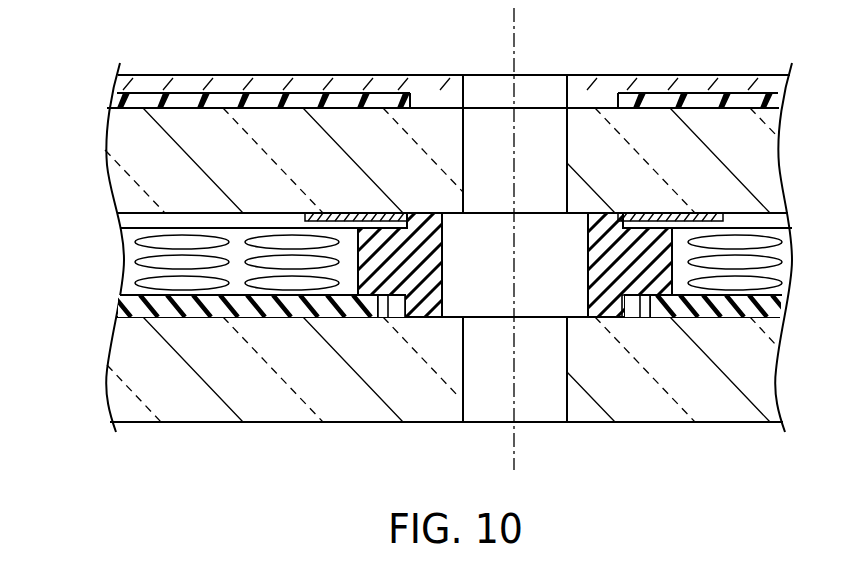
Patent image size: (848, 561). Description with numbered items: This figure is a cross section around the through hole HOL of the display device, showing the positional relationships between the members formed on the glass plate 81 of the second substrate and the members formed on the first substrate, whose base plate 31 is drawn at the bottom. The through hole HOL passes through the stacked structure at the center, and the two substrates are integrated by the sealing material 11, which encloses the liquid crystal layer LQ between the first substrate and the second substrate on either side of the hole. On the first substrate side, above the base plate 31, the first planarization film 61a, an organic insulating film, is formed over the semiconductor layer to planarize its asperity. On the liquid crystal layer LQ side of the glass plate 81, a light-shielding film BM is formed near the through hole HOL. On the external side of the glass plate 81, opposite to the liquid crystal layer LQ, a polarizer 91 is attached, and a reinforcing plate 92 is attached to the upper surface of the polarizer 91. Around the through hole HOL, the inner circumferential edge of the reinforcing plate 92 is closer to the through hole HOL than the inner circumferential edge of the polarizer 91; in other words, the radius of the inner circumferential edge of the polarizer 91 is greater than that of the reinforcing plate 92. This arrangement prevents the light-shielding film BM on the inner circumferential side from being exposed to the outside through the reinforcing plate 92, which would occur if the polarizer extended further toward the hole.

The polarizer 91 is at (222, 103).
The reinforcing plate 92 is at (339, 87).
The light-shielding film BM is at (383, 214).
The through hole HOL is at (535, 123).
The glass plate 81 is at (120, 136).
The sealing material 11 is at (433, 268).
The liquid crystal layer LQ is at (772, 284).
The first planarization film 61a is at (118, 305).
The array substrate 31 is at (109, 387).